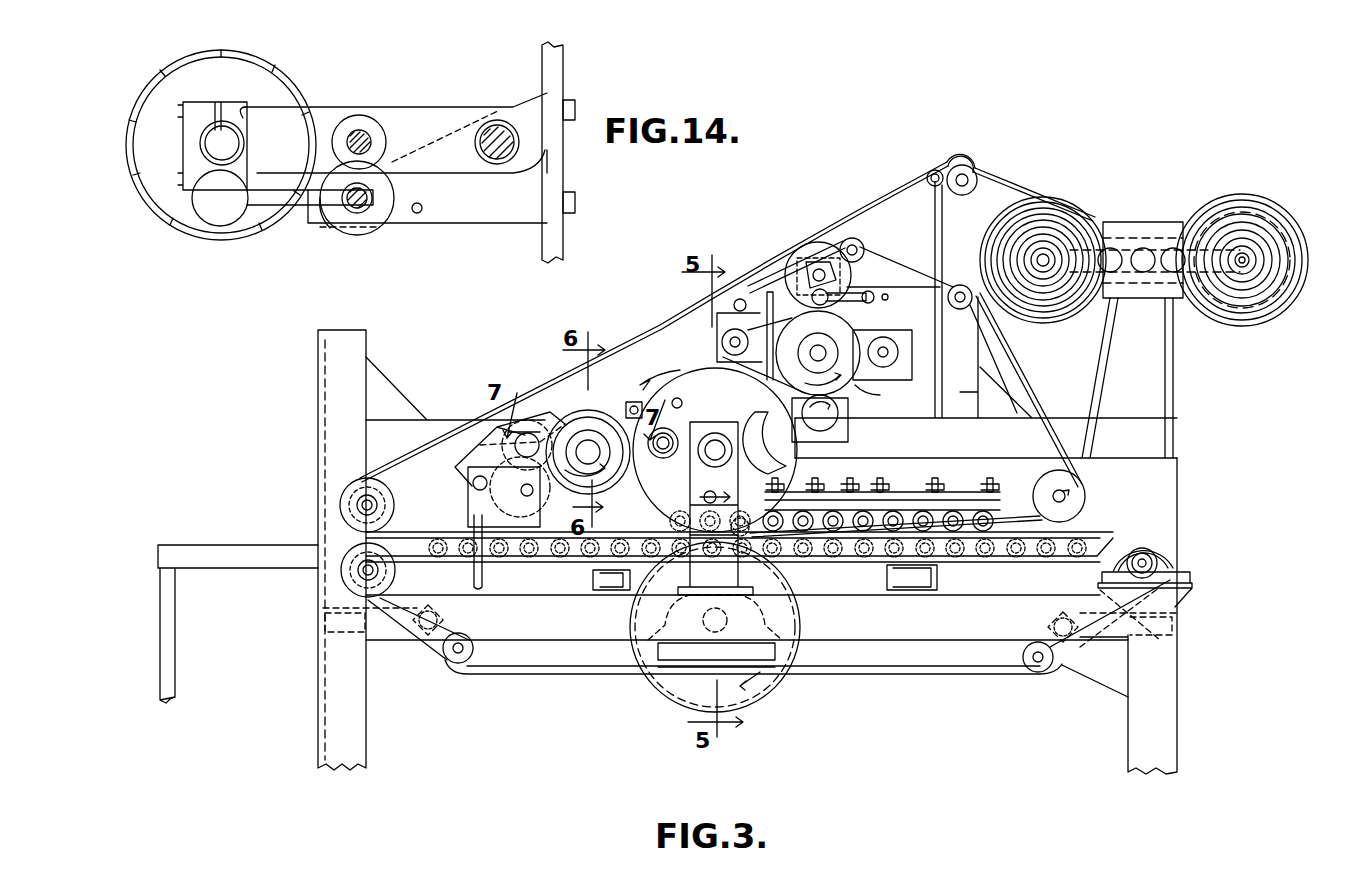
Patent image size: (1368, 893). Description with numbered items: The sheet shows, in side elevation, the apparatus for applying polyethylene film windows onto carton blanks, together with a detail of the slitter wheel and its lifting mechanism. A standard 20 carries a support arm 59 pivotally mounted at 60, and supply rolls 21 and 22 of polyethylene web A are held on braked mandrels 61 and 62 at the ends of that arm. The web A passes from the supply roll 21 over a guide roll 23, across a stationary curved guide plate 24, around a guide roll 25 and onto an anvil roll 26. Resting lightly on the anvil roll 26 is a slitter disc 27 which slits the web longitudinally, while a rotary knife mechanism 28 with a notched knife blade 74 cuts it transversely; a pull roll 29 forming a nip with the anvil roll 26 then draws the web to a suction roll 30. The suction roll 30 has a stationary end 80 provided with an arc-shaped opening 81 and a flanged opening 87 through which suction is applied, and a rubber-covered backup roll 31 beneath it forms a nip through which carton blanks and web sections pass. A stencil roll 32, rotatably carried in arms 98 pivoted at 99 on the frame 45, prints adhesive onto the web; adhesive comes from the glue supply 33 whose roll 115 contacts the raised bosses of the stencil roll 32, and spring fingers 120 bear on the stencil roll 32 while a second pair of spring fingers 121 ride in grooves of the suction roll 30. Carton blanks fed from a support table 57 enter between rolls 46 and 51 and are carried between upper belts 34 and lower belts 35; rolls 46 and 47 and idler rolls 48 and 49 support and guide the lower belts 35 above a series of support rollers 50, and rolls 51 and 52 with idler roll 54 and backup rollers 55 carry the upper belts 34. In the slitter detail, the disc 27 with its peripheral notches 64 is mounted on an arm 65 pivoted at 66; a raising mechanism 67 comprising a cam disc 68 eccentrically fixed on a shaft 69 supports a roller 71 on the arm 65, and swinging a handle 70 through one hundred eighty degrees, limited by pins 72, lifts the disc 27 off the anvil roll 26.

In FIG. 14, the notches 64 is at (226, 52).
In FIG. 14, the slitter disc 27 is at (165, 197).
In FIG. 3, the slitter disc 27 is at (816, 250).
In FIG. 14, the arm 65 is at (446, 107).
In FIG. 14, the roller 71 is at (362, 115).
In FIG. 14, the pivotal mounting 66 is at (498, 122).
In FIG. 14, the handle 70 is at (283, 212).
In FIG. 3, the handle 70 is at (848, 300).
In FIG. 14, the cam disc 68 is at (375, 233).
In FIG. 14, the raising mechanism 67 is at (330, 250).
In FIG. 14, the shaft 69 is at (358, 214).
In FIG. 14, the pins 72 is at (418, 214).
In FIG. 3, the pins 72 is at (888, 302).
In FIG. 3, the frame 45 is at (368, 706).
In FIG. 3, the support table 57 is at (245, 545).
In FIG. 3, the upper belts 34 is at (468, 415).
In FIG. 3, the support rollers 50 is at (955, 552).
In FIG. 3, the lower belts 35 is at (747, 670).
In FIG. 3, the idler roll 48 is at (462, 664).
In FIG. 3, the idler roll 49 is at (1022, 659).
In FIG. 3, the roll 47 is at (1172, 555).
In FIG. 3, the roll 51 is at (392, 506).
In FIG. 3, the roll 46 is at (395, 578).
In FIG. 3, the stationary curved guide plate 24 is at (882, 185).
In FIG. 3, the guide roll 23 is at (962, 195).
In FIG. 3, the polyethylene web A is at (1046, 188).
In FIG. 3, the supply roll 21 is at (1082, 208).
In FIG. 3, the braked mandrel 61 is at (1043, 270).
In FIG. 3, the standard 20 is at (1150, 220).
In FIG. 3, the pivotal mounting 60 is at (1145, 275).
In FIG. 3, the supply roll 22 is at (1285, 212).
In FIG. 3, the support arm 59 is at (1212, 214).
In FIG. 3, the braked mandrel 62 is at (1255, 258).
In FIG. 3, the roll 52 is at (1082, 498).
In FIG. 3, the idler roll 54 is at (856, 242).
In FIG. 3, the guide roll 25 is at (722, 342).
In FIG. 3, the anvil roll 26 is at (846, 392).
In FIG. 3, the rotary knife mechanism 28 is at (898, 352).
In FIG. 3, the knife blade 74 is at (875, 385).
In FIG. 3, the pull roll 29 is at (838, 428).
In FIG. 3, the suction roll 30 is at (800, 457).
In FIG. 3, the end 80 is at (728, 409).
In FIG. 3, the opening 81 is at (777, 485).
In FIG. 3, the flanged opening 87 is at (666, 460).
In FIG. 3, the spring fingers 120 is at (618, 497).
In FIG. 3, the backup roll 31 is at (668, 695).
In FIG. 3, the stencil roll 32 is at (592, 412).
In FIG. 3, the pivot 99 is at (480, 452).
In FIG. 3, the arms 98 is at (538, 420).
In FIG. 3, the adhesive supply 33 is at (536, 413).
In FIG. 3, the roll 115 is at (540, 505).
In FIG. 3, the backup rollers 55 is at (890, 510).
In FIG. 3, the spring fingers 121 is at (822, 490).